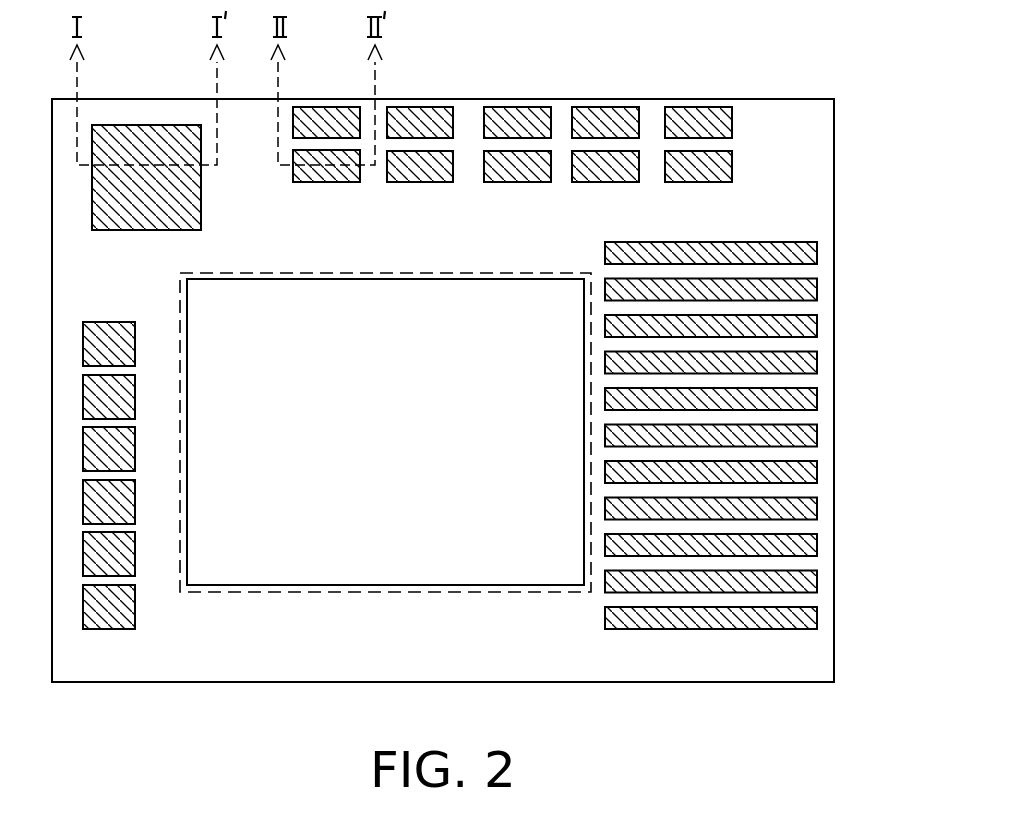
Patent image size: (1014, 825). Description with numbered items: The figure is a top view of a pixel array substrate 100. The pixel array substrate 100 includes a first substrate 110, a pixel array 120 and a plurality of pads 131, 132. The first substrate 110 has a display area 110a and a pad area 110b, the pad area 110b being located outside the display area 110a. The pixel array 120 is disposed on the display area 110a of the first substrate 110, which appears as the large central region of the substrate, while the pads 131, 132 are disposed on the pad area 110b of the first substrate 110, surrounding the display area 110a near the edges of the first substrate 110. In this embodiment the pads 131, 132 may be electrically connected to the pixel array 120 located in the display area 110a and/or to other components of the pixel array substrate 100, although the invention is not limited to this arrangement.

The pixel array substrate 100 is at (480, 373).
The first substrate 110 is at (834, 182).
The display area 110a is at (498, 593).
The pad area 110b is at (788, 137).
The pixel array 120 is at (369, 562).
The pad 131 is at (147, 130).
The pad 132 is at (328, 155).